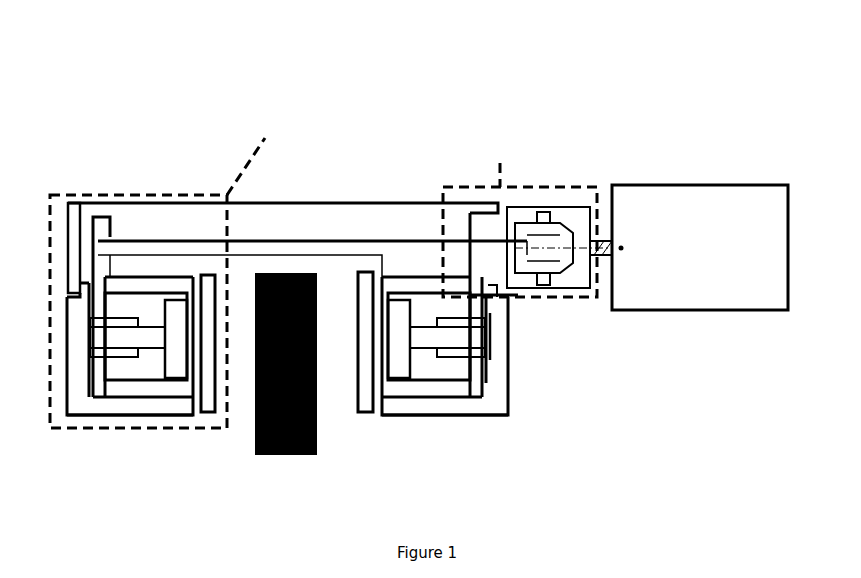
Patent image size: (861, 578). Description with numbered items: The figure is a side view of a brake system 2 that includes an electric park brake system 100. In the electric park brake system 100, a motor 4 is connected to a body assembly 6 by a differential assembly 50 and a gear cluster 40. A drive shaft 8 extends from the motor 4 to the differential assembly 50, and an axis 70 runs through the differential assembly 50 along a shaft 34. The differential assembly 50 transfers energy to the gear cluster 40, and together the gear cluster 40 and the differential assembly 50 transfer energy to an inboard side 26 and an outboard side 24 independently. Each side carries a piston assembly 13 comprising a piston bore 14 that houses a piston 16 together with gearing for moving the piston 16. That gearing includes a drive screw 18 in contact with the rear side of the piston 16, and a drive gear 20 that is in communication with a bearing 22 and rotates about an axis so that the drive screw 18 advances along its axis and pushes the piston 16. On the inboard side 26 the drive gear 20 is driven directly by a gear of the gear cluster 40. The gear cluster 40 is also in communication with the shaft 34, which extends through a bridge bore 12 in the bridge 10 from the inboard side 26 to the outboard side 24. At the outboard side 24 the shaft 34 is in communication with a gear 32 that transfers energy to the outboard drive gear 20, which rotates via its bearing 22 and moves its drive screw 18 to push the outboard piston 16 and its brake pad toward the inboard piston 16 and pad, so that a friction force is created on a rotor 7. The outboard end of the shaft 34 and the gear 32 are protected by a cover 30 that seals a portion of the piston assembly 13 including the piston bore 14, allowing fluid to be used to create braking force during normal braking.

The brake system 2 is at (713, 44).
The motor 4 is at (770, 197).
The body assembly 6 is at (408, 134).
The rotor 7 is at (295, 452).
The drive shaft 8 is at (600, 214).
The bridge 10 is at (272, 203).
The bridge bore 12 is at (351, 228).
The piston assembly 13 is at (132, 486).
The piston bore 14 is at (78, 447).
The piston 16 is at (163, 392).
The drive screw 18 is at (175, 360).
The drive gear 20 is at (105, 365).
The bearing 22 is at (85, 358).
The outboard side 24 is at (120, 145).
The inboard side 26 is at (542, 156).
The cover 30 is at (65, 218).
The gear 32 is at (98, 235).
The shaft 34 is at (183, 247).
The gear cluster 40 is at (475, 314).
The differential assembly 50 is at (581, 316).
The axis 70 is at (621, 248).
The electric park brake system 100 is at (641, 134).